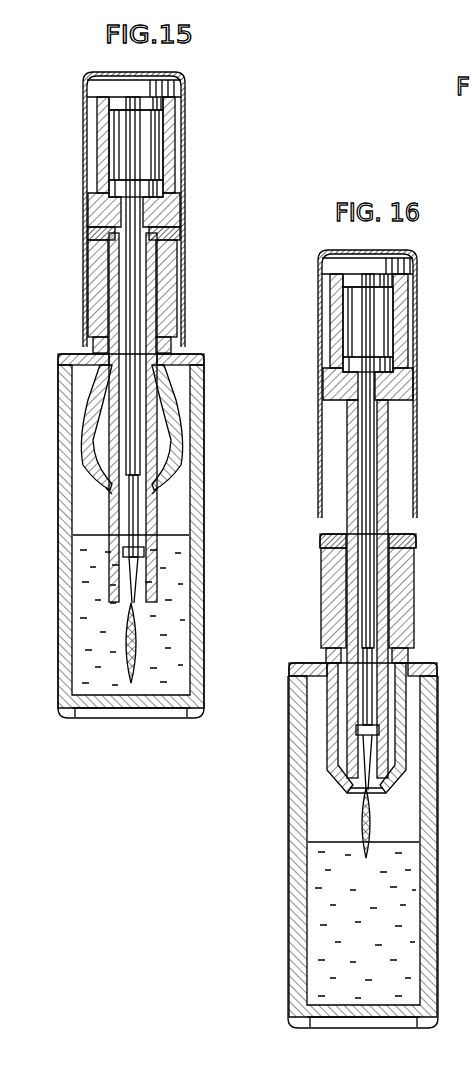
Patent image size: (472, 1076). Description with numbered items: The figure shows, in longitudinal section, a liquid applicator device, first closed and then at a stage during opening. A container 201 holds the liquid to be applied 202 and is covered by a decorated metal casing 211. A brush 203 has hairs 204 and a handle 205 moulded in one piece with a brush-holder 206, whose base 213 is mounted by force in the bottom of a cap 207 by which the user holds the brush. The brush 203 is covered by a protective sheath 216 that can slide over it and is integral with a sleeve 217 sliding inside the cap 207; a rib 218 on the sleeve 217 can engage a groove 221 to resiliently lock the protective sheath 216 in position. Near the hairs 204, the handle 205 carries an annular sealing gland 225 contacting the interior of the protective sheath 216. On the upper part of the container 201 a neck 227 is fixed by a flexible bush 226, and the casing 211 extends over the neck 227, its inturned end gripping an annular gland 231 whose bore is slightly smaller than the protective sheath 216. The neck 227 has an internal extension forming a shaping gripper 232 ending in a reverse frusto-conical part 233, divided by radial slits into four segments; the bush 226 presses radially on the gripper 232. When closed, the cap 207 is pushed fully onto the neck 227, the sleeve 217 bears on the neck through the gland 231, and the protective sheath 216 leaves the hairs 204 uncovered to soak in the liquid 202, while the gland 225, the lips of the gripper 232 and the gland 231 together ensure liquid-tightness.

In FIG. 15, the container 201 is at (196, 482).
In FIG. 16, the container 201 is at (428, 836).
In FIG. 15, the liquid to be applied 202 is at (92, 637).
In FIG. 16, the liquid to be applied 202 is at (322, 890).
In FIG. 15, the brush 203 is at (131, 523).
In FIG. 16, the brush 203 is at (367, 623).
In FIG. 15, the hairs 204 is at (138, 663).
In FIG. 16, the hairs 204 is at (372, 820).
In FIG. 15, the handle 205 is at (134, 290).
In FIG. 16, the handle 205 is at (372, 437).
In FIG. 15, the brush-holder 206 is at (166, 152).
In FIG. 16, the brush-holder 206 is at (398, 319).
In FIG. 15, the cap 207 is at (84, 128).
In FIG. 16, the cap 207 is at (319, 300).
In FIG. 15, the casing 211 is at (59, 462).
In FIG. 16, the casing 211 is at (289, 814).
In FIG. 15, the base 213 is at (183, 82).
In FIG. 15, the protective sheath 216 is at (109, 547).
In FIG. 16, the protective sheath 216 is at (389, 530).
In FIG. 15, the sleeve 217 is at (103, 147).
In FIG. 16, the sleeve 217 is at (340, 340).
In FIG. 15, the rib 218 is at (156, 107).
In FIG. 16, the rib 218 is at (400, 274).
In FIG. 15, the groove 221 is at (160, 184).
In FIG. 16, the groove 221 is at (398, 362).
In FIG. 15, the annular sealing gland 225 is at (144, 553).
In FIG. 16, the annular sealing gland 225 is at (379, 728).
In FIG. 15, the bush 226 is at (97, 392).
In FIG. 16, the bush 226 is at (330, 736).
In FIG. 15, the neck 227 is at (100, 268).
In FIG. 16, the neck 227 is at (335, 600).
In FIG. 15, the annular gland 231 is at (180, 231).
In FIG. 16, the annular gland 231 is at (321, 540).
In FIG. 15, the shaping gripper 232 is at (176, 415).
In FIG. 16, the shaping gripper 232 is at (330, 702).
In FIG. 15, the reverse frusto-conical part 233 is at (107, 485).
In FIG. 16, the reverse frusto-conical part 233 is at (356, 794).